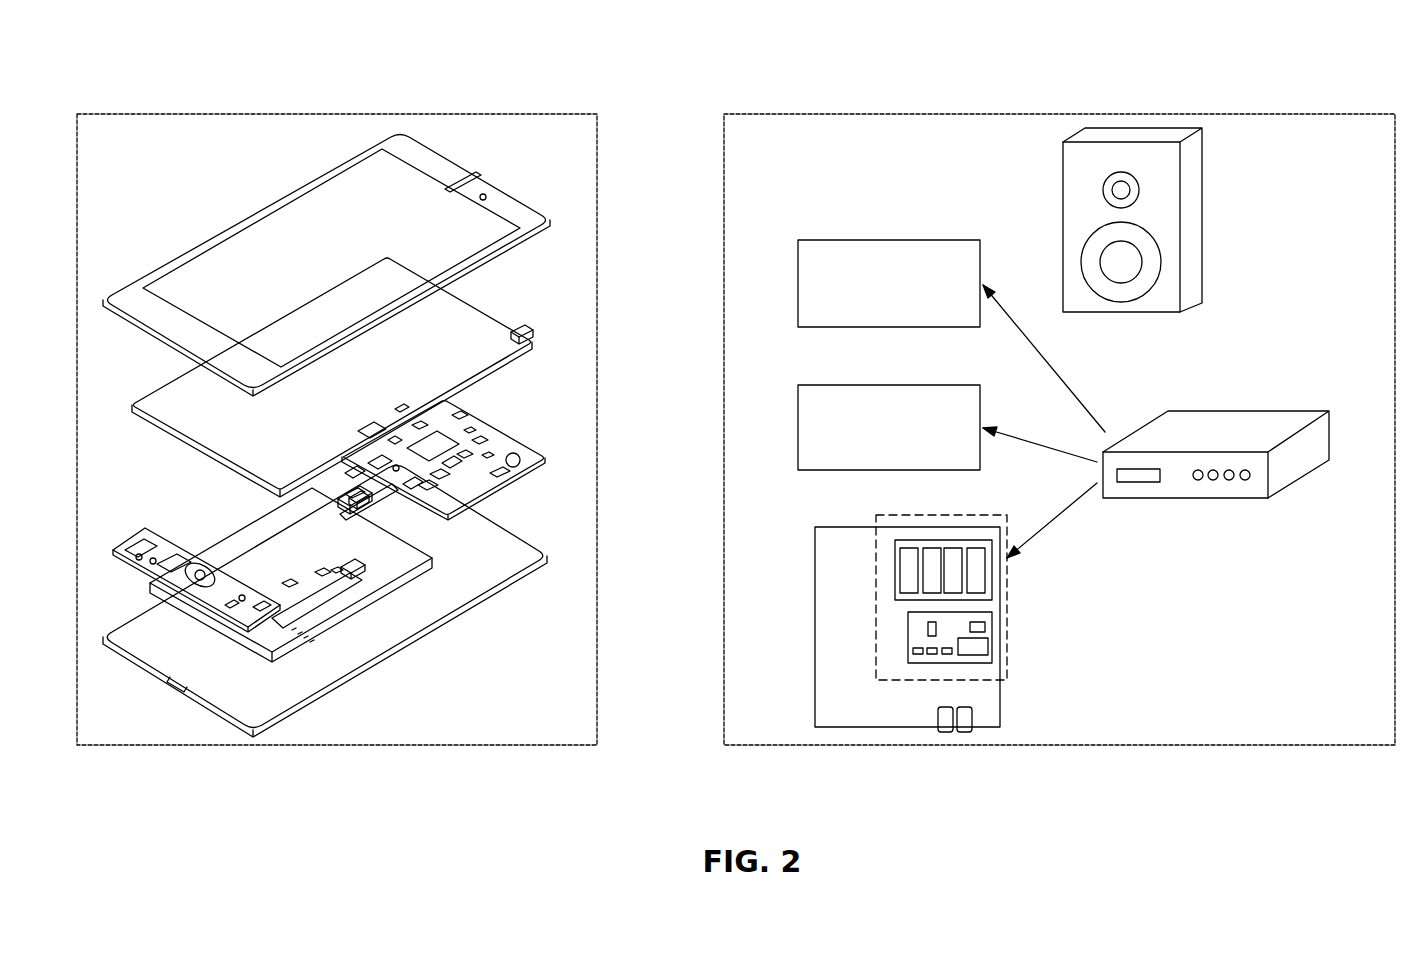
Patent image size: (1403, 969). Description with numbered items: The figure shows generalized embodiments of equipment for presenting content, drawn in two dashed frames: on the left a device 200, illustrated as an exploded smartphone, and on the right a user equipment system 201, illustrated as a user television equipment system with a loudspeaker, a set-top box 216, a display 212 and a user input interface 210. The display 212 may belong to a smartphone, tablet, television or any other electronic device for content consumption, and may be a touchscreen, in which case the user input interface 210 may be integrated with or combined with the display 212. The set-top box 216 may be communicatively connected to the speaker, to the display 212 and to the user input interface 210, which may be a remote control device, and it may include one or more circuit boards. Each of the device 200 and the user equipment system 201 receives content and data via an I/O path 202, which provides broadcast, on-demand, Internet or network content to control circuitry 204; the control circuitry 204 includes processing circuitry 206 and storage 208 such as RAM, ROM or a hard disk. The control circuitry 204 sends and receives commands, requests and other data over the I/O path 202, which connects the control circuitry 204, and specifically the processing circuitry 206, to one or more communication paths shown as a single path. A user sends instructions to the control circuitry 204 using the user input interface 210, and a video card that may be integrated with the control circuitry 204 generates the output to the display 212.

The device 200 is at (188, 63).
The user equipment system 201 is at (1266, 68).
The I/O path 202 is at (183, 592).
The control circuitry 204 is at (873, 645).
The processing circuitry 206 is at (905, 620).
The storage 208 is at (890, 567).
The user input interface 210 is at (447, 323).
The display 212 is at (1060, 226).
The set-top box 216 is at (1220, 410).